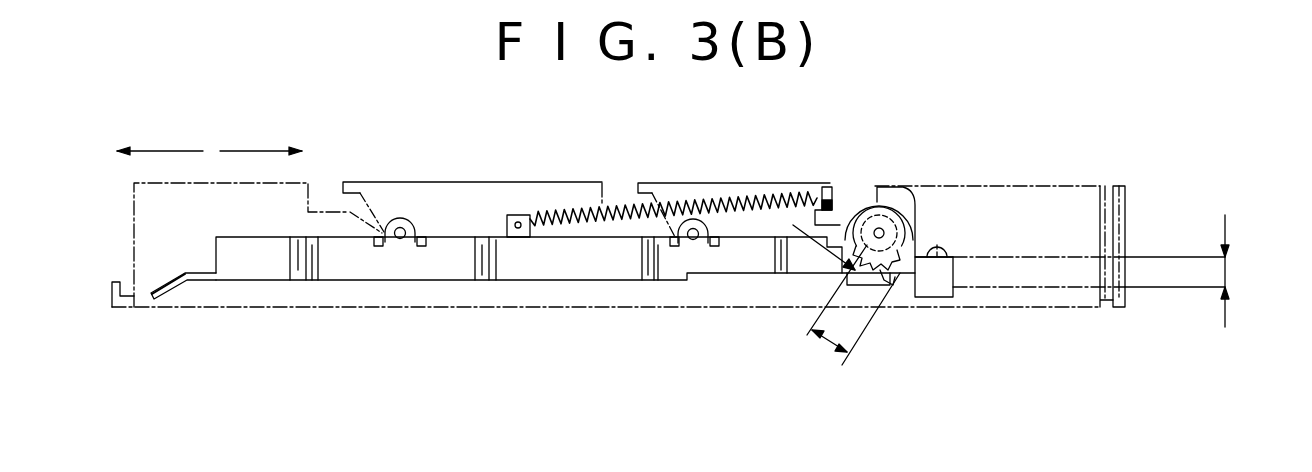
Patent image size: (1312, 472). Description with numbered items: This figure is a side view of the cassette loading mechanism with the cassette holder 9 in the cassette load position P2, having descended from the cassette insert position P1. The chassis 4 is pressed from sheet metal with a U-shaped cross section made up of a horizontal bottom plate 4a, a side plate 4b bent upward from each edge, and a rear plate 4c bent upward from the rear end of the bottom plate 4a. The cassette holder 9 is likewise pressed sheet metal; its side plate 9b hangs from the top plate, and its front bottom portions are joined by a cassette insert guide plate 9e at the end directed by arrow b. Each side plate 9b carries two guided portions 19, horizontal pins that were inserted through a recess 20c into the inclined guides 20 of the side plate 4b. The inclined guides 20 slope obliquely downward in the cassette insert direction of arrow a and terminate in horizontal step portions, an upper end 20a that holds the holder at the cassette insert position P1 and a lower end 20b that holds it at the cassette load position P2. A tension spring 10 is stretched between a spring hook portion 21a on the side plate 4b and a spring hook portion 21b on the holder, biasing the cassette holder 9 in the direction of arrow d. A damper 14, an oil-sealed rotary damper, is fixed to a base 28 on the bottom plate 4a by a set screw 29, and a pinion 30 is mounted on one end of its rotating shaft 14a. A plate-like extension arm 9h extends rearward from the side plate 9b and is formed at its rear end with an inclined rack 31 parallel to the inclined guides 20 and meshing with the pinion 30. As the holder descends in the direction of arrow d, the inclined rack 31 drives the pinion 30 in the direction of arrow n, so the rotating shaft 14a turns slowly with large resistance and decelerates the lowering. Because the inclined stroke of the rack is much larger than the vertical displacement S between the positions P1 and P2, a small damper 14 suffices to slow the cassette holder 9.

The chassis 4 is at (1052, 230).
The bottom plate 4a is at (1108, 307).
The side plate 4b is at (1035, 195).
The rear plate 4c is at (1127, 220).
The cassette holder 9 is at (272, 256).
The side plate 9b is at (548, 263).
The cassette insert guide plate 9e is at (193, 283).
The extension arm 9h is at (762, 258).
The tension spring 10 is at (750, 193).
The damper 14 is at (892, 200).
The rotating shaft 14a is at (872, 227).
The guided portion 19 is at (400, 220).
The inclined guide 20 is at (368, 212).
The upper end 20a is at (348, 213).
The lower end 20b is at (385, 240).
The recess 20c is at (318, 182).
The spring hook portion 21a is at (826, 187).
The spring hook portion 21b is at (513, 215).
The base 28 is at (943, 292).
The set screw 29 is at (989, 234).
The pinion 30 is at (873, 263).
The inclined rack 31 is at (893, 287).
The arrow a is at (250, 150).
The arrow b is at (165, 150).
The arrow d is at (793, 225).
The arrow n is at (907, 178).
The cassette insert position P1 is at (1183, 257).
The cassette load position P2 is at (1157, 288).
The vertical displacement S is at (1234, 271).